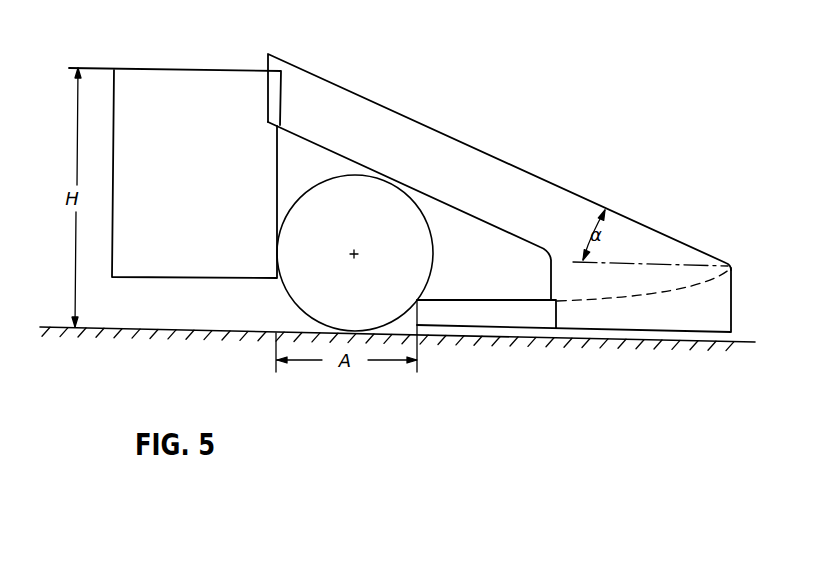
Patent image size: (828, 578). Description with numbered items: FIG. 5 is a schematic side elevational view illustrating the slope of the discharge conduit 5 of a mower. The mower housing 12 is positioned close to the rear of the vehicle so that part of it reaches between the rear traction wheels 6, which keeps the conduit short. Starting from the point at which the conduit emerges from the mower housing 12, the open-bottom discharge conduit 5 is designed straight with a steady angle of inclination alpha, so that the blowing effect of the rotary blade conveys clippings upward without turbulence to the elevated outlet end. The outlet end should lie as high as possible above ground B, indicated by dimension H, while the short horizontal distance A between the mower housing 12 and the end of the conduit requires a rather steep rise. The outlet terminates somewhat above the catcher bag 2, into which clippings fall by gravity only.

The catcher bag 2 is at (137, 95).
The discharge conduit 5 is at (417, 140).
The rear traction wheels 6 is at (300, 292).
The mower housing 12 is at (698, 305).
The ground B is at (182, 333).